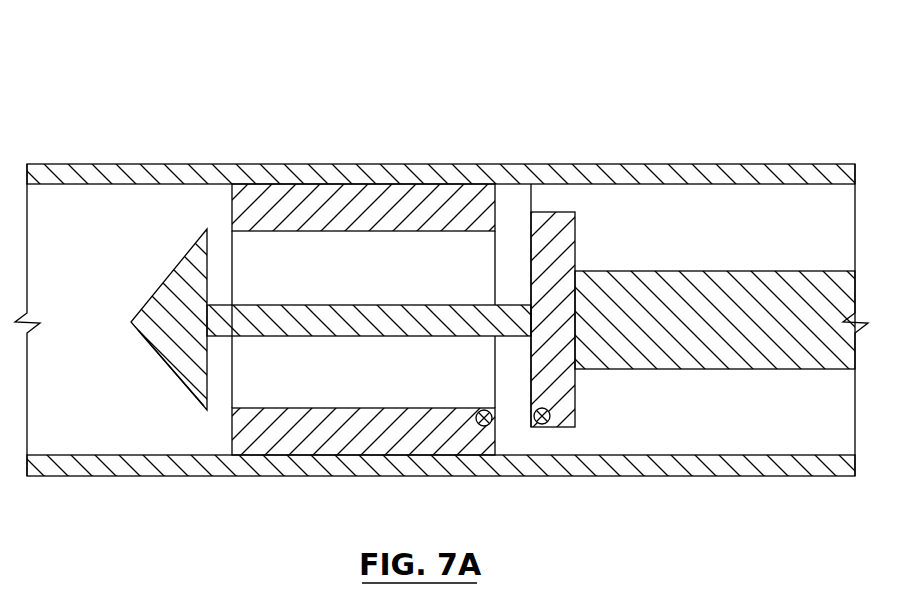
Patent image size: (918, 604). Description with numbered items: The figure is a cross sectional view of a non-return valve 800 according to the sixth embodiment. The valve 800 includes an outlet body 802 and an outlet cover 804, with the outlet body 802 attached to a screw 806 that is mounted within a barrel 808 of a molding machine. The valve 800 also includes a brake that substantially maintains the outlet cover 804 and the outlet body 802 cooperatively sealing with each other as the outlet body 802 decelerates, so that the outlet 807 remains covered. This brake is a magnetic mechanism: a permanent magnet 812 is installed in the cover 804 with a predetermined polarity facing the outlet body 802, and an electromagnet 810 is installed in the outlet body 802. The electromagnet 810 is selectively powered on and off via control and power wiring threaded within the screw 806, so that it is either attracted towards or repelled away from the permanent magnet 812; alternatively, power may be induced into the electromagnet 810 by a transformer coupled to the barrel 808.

The non-return valve 800 is at (580, 100).
The outlet body 802 is at (550, 240).
The outlet cover 804 is at (407, 203).
The screw 806 is at (638, 293).
The outlet 807 is at (548, 200).
The barrel 808 is at (543, 173).
The electromagnet 810 is at (542, 424).
The permanent magnet 812 is at (484, 426).